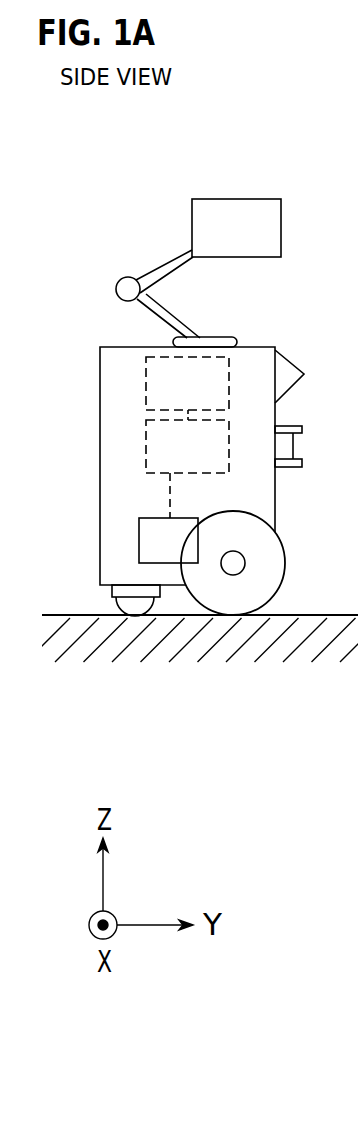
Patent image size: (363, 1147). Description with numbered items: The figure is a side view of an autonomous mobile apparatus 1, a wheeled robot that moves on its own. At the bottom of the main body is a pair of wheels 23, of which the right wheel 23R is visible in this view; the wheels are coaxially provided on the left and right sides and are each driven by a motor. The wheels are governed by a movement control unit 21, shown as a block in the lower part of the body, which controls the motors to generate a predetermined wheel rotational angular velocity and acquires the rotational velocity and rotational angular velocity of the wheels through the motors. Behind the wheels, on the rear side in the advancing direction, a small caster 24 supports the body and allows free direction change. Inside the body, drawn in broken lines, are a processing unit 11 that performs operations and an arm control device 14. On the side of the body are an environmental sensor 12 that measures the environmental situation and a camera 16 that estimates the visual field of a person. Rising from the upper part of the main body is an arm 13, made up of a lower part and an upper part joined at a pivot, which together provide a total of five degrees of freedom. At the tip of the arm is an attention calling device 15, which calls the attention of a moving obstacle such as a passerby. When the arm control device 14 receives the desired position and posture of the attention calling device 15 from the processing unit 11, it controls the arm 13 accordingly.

The autonomous mobile apparatus 1 is at (302, 162).
The processing unit 11 is at (146, 445).
The environmental sensor 12 is at (288, 446).
The arm 13 is at (172, 313).
The arm control device 14 is at (146, 384).
The attention calling device 15 is at (270, 228).
The camera 16 is at (293, 382).
The movement control unit 21 is at (139, 533).
The wheels 23 is at (254, 612).
The right wheel 23R is at (243, 605).
The caster 24 is at (140, 615).